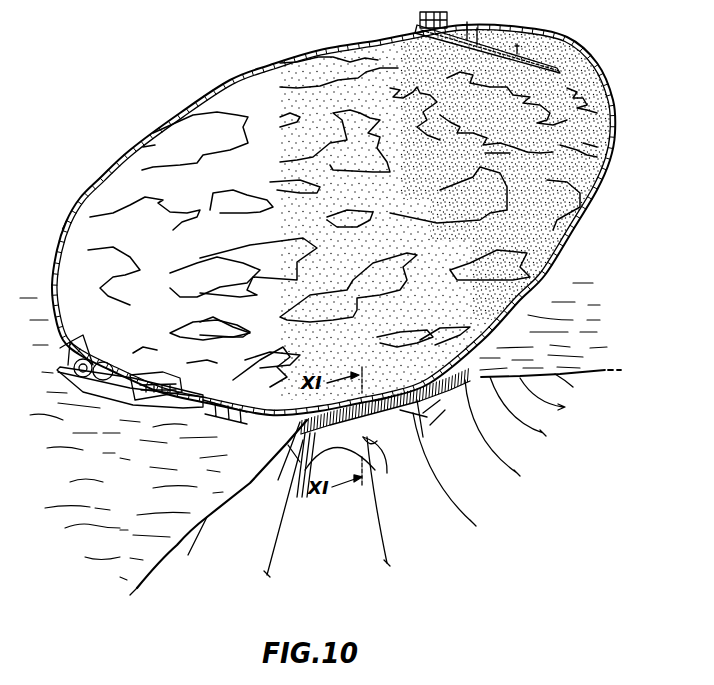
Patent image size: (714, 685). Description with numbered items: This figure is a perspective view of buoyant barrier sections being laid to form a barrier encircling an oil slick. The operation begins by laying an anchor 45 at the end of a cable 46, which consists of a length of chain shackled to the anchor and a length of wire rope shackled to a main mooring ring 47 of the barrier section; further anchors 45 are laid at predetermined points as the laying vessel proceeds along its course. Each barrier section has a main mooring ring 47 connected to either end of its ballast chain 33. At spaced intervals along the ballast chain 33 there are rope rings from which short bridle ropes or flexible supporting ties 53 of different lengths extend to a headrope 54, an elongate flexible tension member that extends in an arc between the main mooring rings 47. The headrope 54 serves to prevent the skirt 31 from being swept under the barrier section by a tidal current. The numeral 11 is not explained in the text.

The floating enclosure boundary 11 is at (62, 230).
The skirt 31 is at (300, 462).
The ballast chain 33 is at (340, 461).
The anchor 45 is at (267, 573).
The cable 46 is at (280, 525).
The main mooring ring 47 is at (283, 485).
The flexible supporting ties 53 is at (304, 480).
The headrope 54 is at (377, 441).